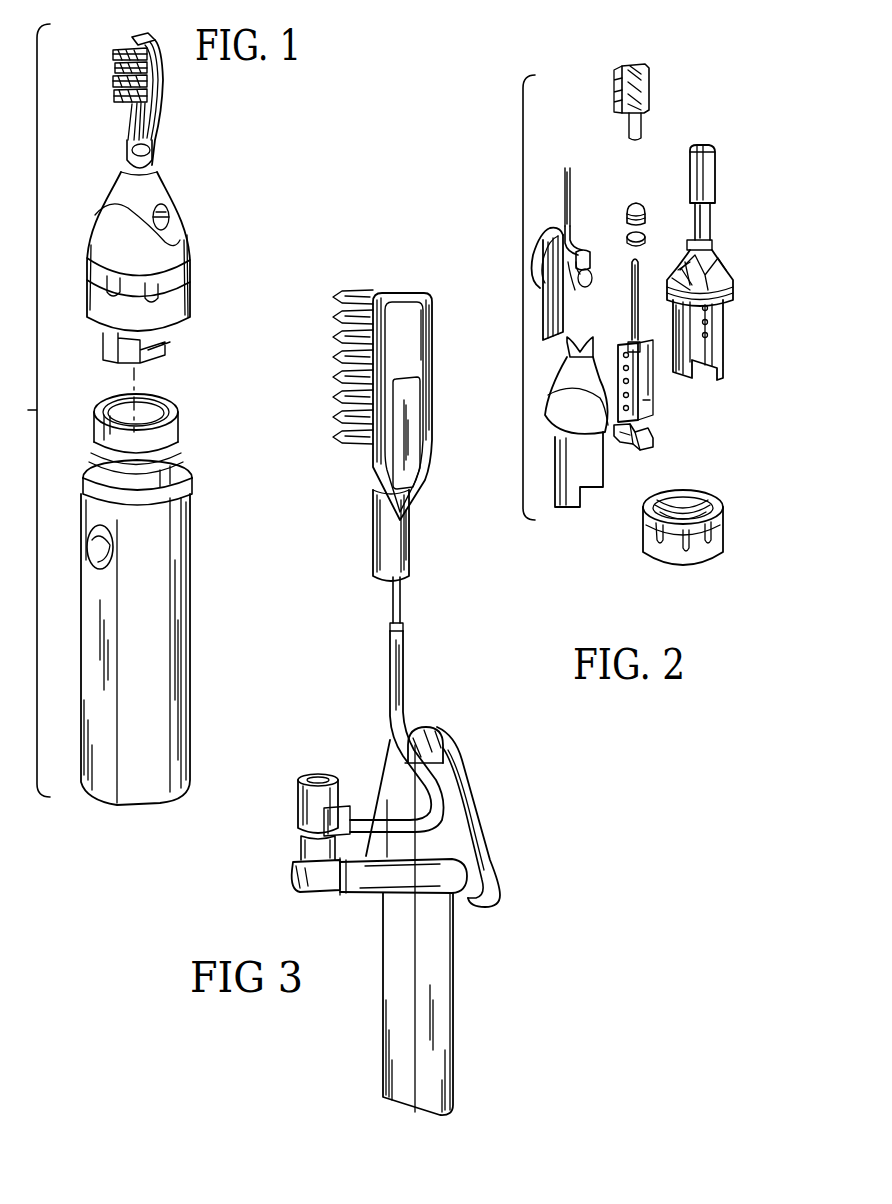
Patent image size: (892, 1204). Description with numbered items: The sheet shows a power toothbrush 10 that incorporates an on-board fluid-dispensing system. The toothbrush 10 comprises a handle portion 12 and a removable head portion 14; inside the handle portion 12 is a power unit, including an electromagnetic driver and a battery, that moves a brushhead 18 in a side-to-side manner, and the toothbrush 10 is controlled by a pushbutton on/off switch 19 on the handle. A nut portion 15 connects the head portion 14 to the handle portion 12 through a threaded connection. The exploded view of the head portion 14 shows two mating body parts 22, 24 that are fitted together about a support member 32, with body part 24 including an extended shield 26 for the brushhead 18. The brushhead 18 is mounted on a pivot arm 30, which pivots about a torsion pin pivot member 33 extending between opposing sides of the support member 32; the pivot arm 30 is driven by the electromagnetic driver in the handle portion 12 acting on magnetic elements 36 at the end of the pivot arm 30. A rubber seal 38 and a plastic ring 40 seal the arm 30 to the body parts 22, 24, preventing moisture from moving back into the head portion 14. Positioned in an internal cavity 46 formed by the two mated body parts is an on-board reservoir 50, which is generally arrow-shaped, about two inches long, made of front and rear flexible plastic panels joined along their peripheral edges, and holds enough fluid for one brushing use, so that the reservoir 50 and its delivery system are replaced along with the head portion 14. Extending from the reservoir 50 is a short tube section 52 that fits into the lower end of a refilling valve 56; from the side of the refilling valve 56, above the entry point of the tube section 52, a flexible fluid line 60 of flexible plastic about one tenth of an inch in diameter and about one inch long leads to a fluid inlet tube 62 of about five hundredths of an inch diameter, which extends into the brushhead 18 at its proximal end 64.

In FIG. 1, the power toothbrush 10 is at (246, 285).
In FIG. 1, the handle portion 12 is at (190, 522).
In FIG. 1, the removable head portion 14 is at (183, 222).
In FIG. 2, the nut portion 15 is at (643, 525).
In FIG. 1, the brushhead 18 is at (113, 70).
In FIG. 3, the brushhead 18 is at (418, 298).
In FIG. 2, the brushhead 18 is at (637, 66).
In FIG. 1, the pushbutton on/off switch 19 is at (93, 547).
In FIG. 2, the body part 22 is at (553, 435).
In FIG. 2, the body part 24 is at (716, 272).
In FIG. 2, the extended shield 26 is at (690, 162).
In FIG. 2, the pivot arm 30 is at (638, 280).
In FIG. 2, the support member 32 is at (640, 403).
In FIG. 2, the torsion pin pivot member 33 is at (630, 345).
In FIG. 2, the magnetic elements 36 is at (652, 445).
In FIG. 2, the rubber seal 38 is at (632, 203).
In FIG. 2, the plastic ring 40 is at (647, 237).
In FIG. 2, the internal cavity 46 is at (681, 265).
In FIG. 3, the on-board reservoir 50 is at (512, 838).
In FIG. 2, the on-board reservoir 50 is at (548, 238).
In FIG. 3, the tube section 52 is at (372, 888).
In FIG. 2, the tube section 52 is at (598, 313).
In FIG. 3, the refilling valve 56 is at (282, 836).
In FIG. 2, the refilling valve 56 is at (589, 270).
In FIG. 3, the flexible fluid line 60 is at (404, 712).
In FIG. 2, the flexible fluid line 60 is at (573, 242).
In FIG. 3, the fluid inlet tube 62 is at (403, 608).
In FIG. 2, the fluid inlet tube 62 is at (567, 170).
In FIG. 3, the proximal end 64 is at (378, 582).